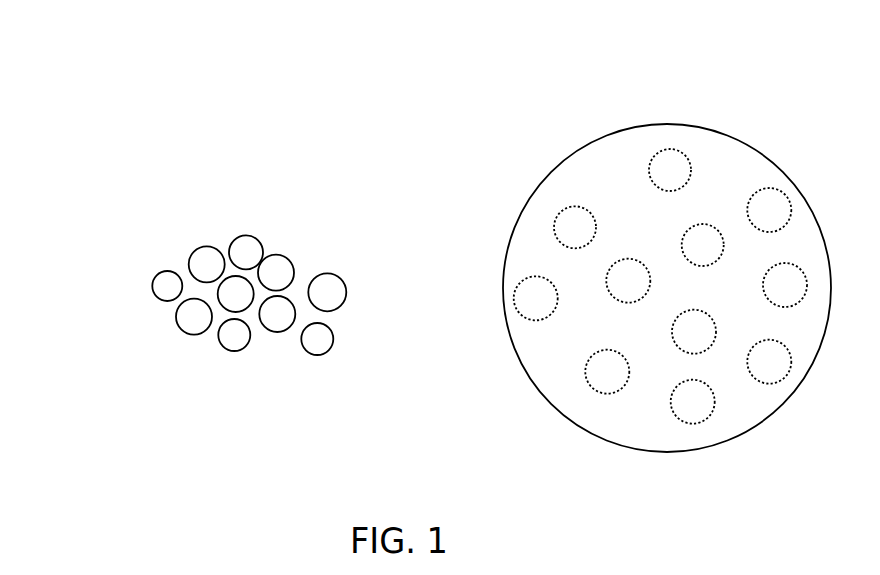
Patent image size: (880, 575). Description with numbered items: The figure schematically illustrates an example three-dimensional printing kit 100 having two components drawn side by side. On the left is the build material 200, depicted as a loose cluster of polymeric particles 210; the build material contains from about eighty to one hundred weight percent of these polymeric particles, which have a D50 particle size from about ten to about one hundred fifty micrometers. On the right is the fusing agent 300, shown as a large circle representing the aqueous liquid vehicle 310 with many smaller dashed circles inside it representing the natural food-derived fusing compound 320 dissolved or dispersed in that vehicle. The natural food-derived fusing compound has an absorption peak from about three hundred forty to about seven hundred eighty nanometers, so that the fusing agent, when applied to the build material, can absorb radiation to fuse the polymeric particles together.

The three-dimensional printing kit 100 is at (147, 50).
The build material 200 is at (228, 222).
The polymeric particles 210 is at (163, 283).
The fusing agent 300 is at (537, 135).
The aqueous liquid vehicle 310 is at (615, 420).
The natural food-derived fusing compound 320 is at (670, 162).